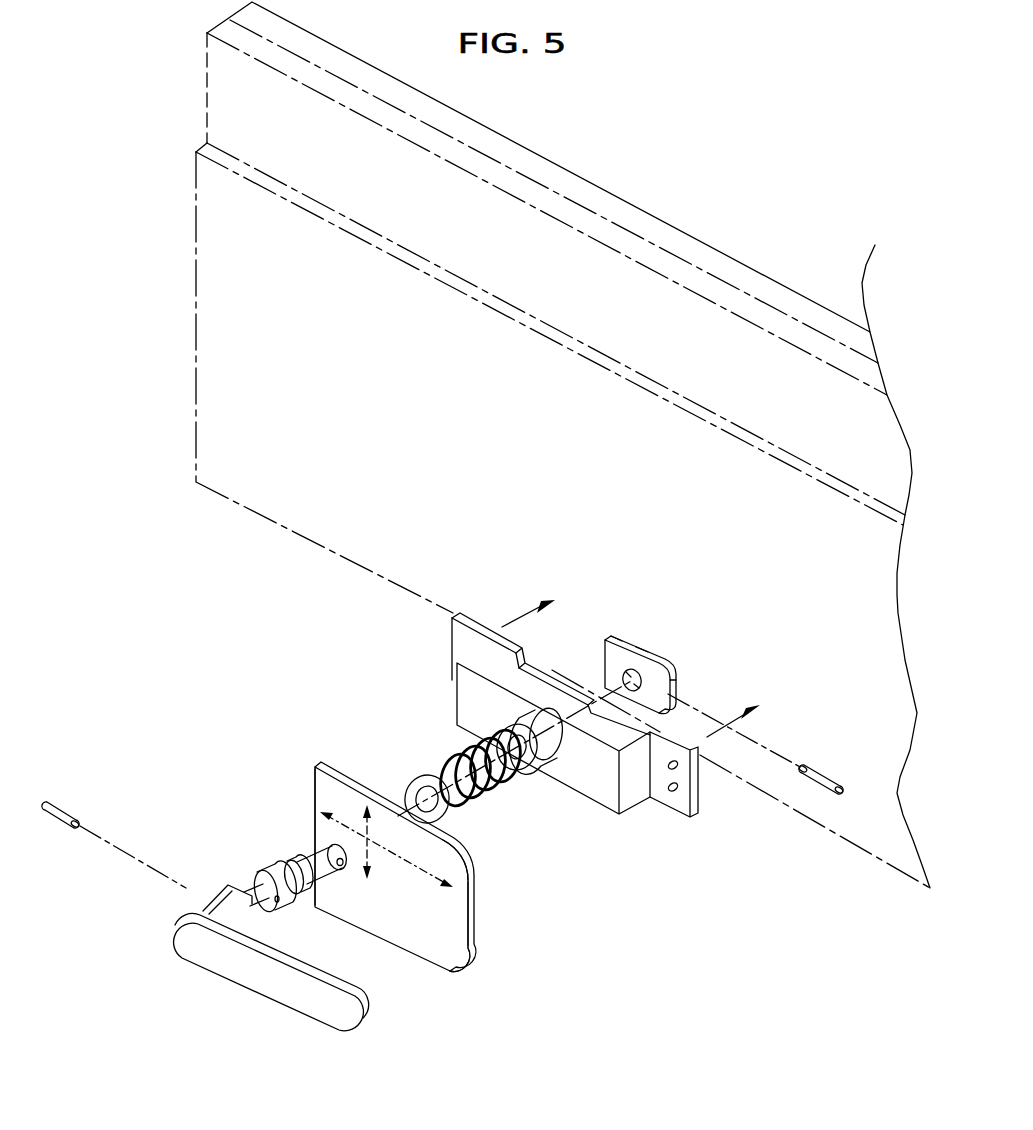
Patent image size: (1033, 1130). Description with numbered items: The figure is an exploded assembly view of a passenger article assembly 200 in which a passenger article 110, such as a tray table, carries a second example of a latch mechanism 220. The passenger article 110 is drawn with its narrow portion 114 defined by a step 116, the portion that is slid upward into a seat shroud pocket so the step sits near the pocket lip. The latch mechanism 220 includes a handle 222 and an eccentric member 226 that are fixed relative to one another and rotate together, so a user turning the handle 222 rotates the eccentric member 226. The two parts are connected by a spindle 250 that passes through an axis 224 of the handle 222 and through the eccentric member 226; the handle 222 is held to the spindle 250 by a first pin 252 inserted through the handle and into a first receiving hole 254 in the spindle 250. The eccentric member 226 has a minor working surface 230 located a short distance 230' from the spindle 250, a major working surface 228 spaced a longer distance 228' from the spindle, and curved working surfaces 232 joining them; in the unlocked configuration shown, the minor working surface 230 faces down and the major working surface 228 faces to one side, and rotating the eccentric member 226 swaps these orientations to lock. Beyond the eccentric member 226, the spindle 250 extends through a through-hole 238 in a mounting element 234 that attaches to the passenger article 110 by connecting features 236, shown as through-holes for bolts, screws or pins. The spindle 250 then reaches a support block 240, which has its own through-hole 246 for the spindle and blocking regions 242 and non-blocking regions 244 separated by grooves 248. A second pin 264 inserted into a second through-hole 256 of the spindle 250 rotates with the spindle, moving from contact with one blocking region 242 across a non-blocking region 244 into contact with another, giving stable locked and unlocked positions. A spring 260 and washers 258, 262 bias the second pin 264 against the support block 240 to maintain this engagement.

The passenger article 110 is at (503, 445).
The narrow portion 114 is at (217, 77).
The step 116 is at (207, 147).
The passenger article assembly 200 is at (681, 147).
The latch mechanism 220 is at (228, 980).
The handle 222 is at (303, 1010).
The axis 224 is at (227, 913).
The eccentric member 226 is at (440, 940).
The major working surface 228 is at (510, 914).
The longer distance 228' is at (413, 849).
The minor working surface 230 is at (342, 895).
The short distance 230' is at (398, 855).
The curved working surface 232 is at (470, 867).
The mounting element 234 is at (578, 718).
The connecting features 236 is at (690, 788).
The through-hole 238 is at (550, 770).
The support block 240 is at (652, 644).
The blocking region 242 is at (676, 676).
The non-blocking region 244 is at (620, 637).
The through-hole 246 is at (607, 677).
The groove 248 is at (643, 650).
The spindle 250 is at (272, 867).
The first pin 252 is at (67, 812).
The first receiving hole 254 is at (252, 887).
The second through-hole 256 is at (331, 857).
The washer 258 is at (420, 777).
The spring 260 is at (460, 755).
The washer 262 is at (468, 656).
The second pin 264 is at (820, 777).